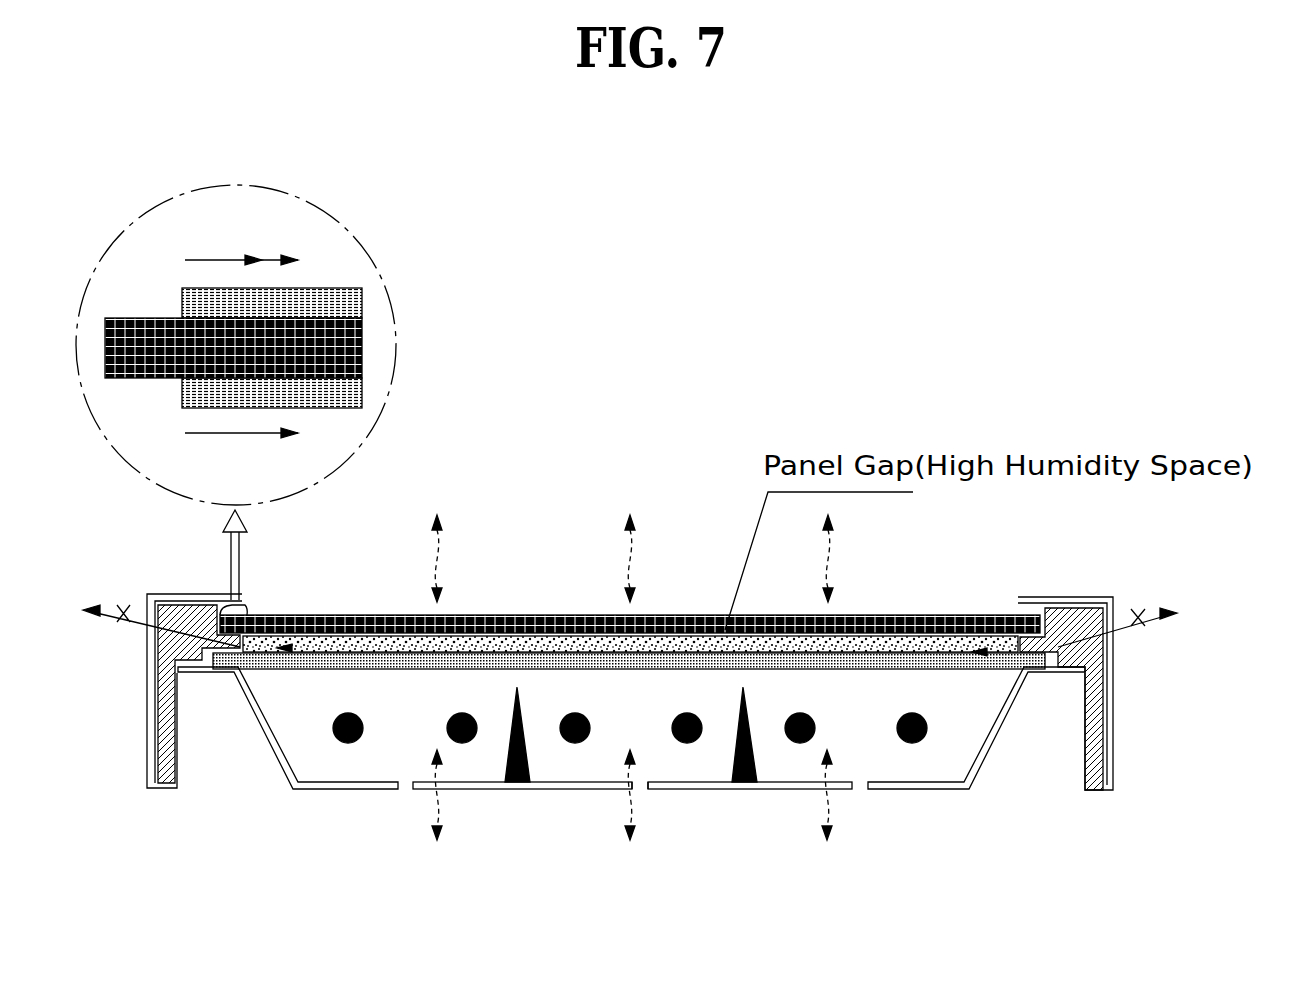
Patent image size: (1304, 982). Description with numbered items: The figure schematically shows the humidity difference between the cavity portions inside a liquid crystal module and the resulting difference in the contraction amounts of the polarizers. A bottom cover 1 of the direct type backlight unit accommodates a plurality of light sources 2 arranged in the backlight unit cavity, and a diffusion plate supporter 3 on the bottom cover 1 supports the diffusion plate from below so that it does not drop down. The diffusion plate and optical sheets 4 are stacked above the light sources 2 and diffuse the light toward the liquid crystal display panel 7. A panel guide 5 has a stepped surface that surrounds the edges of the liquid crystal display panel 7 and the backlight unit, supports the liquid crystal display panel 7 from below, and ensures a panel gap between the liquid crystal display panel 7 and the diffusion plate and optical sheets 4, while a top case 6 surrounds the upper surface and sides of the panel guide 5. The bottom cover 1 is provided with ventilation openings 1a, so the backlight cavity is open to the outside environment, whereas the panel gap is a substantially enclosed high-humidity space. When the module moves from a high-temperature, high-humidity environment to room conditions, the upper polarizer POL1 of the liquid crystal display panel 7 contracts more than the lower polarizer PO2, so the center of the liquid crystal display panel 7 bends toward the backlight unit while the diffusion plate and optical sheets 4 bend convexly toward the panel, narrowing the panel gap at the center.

The bottom cover 1 is at (993, 730).
The ventilation openings 1a is at (647, 793).
The light sources 2 is at (907, 743).
The diffusion plate supporter 3 is at (743, 790).
The diffusion plate and optical sheets 4 is at (875, 636).
The panel guide 5 is at (1078, 608).
The top case 6 is at (1108, 690).
The liquid crystal display panel 7 is at (365, 343).
The upper polarizer POL1 is at (350, 305).
The lower polarizer PO2 is at (350, 390).